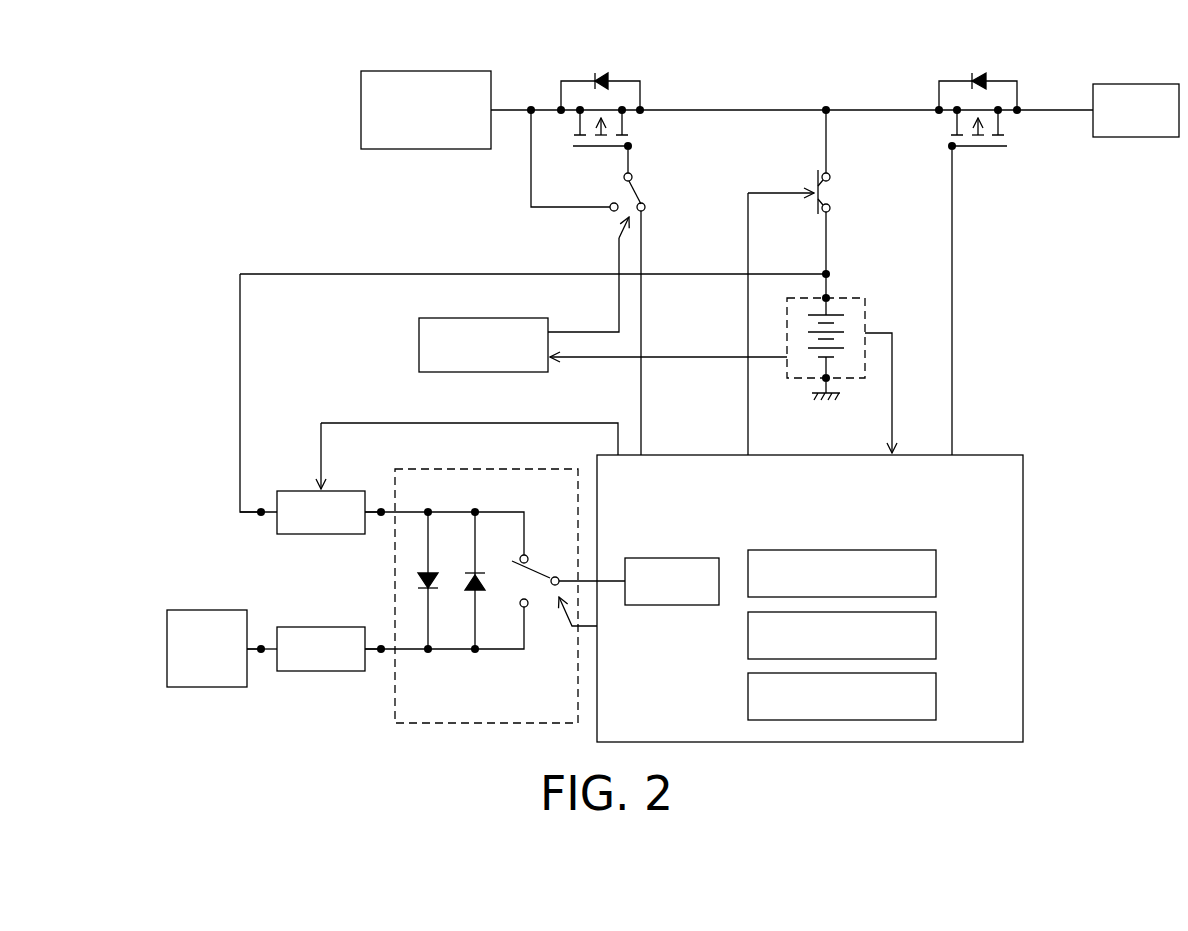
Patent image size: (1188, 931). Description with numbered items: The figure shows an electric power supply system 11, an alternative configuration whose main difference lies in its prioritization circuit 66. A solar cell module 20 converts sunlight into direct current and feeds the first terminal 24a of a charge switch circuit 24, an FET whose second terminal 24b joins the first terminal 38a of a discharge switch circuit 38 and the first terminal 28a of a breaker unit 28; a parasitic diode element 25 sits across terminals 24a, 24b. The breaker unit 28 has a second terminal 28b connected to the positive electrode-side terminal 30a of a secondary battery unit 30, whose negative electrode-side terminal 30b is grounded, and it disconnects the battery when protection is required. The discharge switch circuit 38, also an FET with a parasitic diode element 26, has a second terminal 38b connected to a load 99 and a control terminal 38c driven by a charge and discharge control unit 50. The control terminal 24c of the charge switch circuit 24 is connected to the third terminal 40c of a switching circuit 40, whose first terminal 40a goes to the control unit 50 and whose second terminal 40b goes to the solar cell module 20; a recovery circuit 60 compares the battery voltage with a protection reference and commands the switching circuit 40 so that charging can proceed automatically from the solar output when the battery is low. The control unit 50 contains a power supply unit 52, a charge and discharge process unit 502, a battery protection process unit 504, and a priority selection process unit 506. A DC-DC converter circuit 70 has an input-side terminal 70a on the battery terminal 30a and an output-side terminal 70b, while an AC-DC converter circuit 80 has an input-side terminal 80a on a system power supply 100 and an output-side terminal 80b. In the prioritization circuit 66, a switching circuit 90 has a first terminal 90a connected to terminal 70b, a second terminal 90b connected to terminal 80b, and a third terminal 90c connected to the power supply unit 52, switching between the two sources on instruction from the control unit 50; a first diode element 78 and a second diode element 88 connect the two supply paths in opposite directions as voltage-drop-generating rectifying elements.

The electric power supply system 11 is at (279, 102).
The solar cell module 20 is at (428, 71).
The charge switch circuit 24 is at (621, 130).
The first terminal 24a is at (578, 119).
The second terminal 24b is at (623, 108).
The control terminal 24c is at (624, 152).
The diode element 25 is at (601, 72).
The diode element 26 is at (979, 72).
The breaker unit 28 is at (818, 204).
The first terminal 28a is at (831, 174).
The second terminal 28b is at (831, 212).
The secondary battery unit 30 is at (844, 339).
The positive electrode-side terminal 30a is at (831, 296).
The negative electrode-side terminal 30b is at (822, 381).
The discharge switch circuit 38 is at (987, 256).
The first terminal 38a is at (955, 119).
The second terminal 38b is at (1000, 108).
The control terminal 38c is at (956, 150).
The switching circuit 40 is at (623, 282).
The first terminal 40a is at (646, 207).
The second terminal 40b is at (612, 212).
The third terminal 40c is at (633, 175).
The charge and discharge control unit 50 is at (841, 598).
The power supply unit 52 is at (672, 608).
The recovery circuit 60 is at (419, 347).
The prioritization circuit 66 is at (475, 723).
The DC-DC converter circuit 70 is at (314, 547).
The input-side terminal 70a is at (262, 518).
The output-side terminal 70b is at (381, 518).
The first diode element 78 is at (433, 570).
The AC-DC converter circuit 80 is at (314, 682).
The input-side terminal 80a is at (262, 655).
The output-side terminal 80b is at (381, 655).
The second diode element 88 is at (470, 593).
The switching circuit 90 is at (525, 581).
The first terminal 90a is at (520, 556).
The second terminal 90b is at (520, 607).
The third terminal 90c is at (556, 576).
The load 99 is at (1138, 84).
The system power supply 100 is at (207, 688).
The charge and discharge process unit 502 is at (938, 575).
The battery protection process unit 504 is at (938, 634).
The priority selection process unit 506 is at (938, 697).